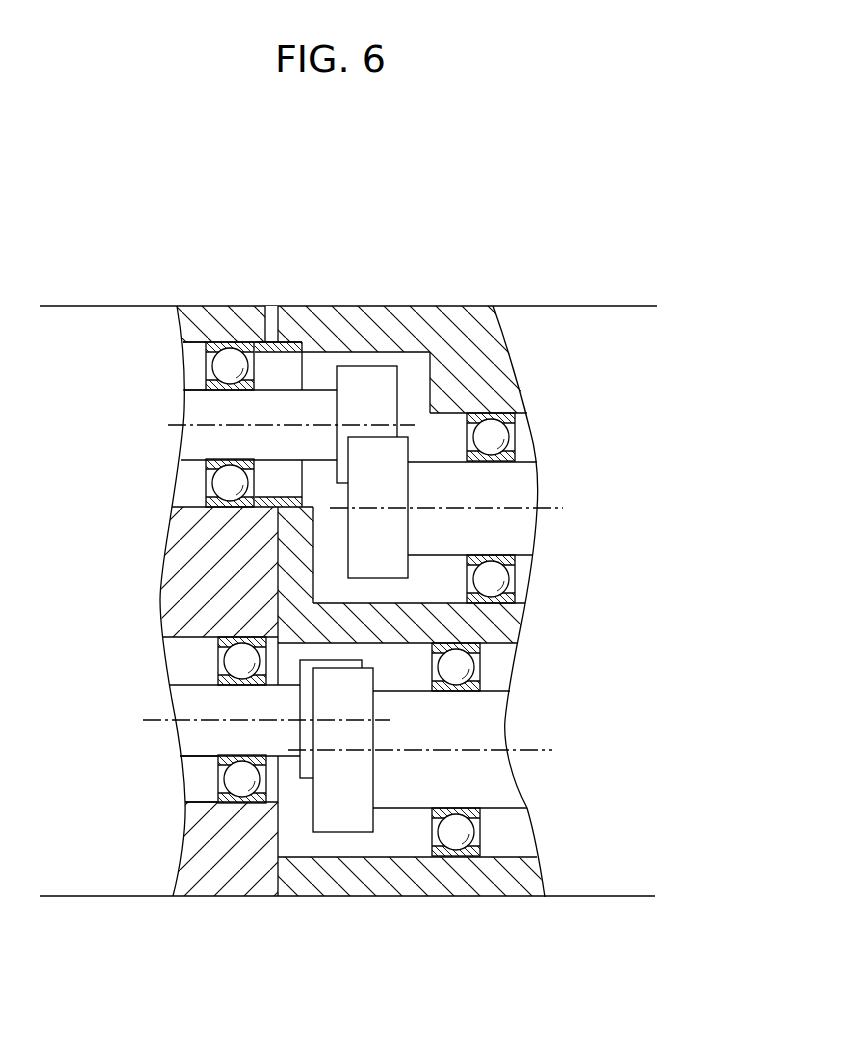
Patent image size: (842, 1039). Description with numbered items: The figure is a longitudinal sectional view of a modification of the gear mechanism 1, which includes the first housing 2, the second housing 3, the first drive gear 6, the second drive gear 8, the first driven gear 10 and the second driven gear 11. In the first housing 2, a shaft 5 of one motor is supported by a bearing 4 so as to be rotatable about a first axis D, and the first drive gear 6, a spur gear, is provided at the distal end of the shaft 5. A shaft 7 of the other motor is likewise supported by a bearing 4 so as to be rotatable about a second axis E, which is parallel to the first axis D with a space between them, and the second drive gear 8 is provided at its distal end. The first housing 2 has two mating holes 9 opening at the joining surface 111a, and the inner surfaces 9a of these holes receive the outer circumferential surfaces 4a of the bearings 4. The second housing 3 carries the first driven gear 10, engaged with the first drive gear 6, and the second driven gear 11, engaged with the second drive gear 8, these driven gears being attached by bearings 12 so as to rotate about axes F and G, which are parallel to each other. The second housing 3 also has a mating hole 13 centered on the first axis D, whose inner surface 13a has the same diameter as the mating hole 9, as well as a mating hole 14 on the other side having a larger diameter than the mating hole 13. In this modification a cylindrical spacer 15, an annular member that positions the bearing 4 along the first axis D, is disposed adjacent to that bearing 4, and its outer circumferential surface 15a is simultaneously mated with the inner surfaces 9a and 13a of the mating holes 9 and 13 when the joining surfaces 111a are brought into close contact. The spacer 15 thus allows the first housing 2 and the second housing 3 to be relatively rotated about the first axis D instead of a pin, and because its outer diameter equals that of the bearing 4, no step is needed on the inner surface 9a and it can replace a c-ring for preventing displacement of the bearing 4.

The gear mechanism 1 is at (512, 258).
The first housing 2 is at (65, 306).
The second housing 3 is at (467, 306).
The bearing 4 is at (223, 320).
The outer circumferential surface 4a is at (208, 340).
The shaft 5 is at (318, 385).
The first drive gear 6 is at (350, 366).
The shaft 7 is at (192, 684).
The second drive gear 8 is at (362, 706).
The mating hole 9 is at (192, 505).
The inner surface 9a is at (190, 352).
The first driven gear 10 is at (408, 532).
The second driven gear 11 is at (343, 832).
The bearing 12 is at (533, 435).
The mating hole 13 is at (396, 352).
The inner surface 13a is at (440, 378).
The mating hole 14 is at (392, 850).
The spacer 15 is at (295, 318).
The outer circumferential surface 15a is at (262, 306).
The joining surface 111a is at (272, 864).
The first axis D is at (194, 425).
The second axis E is at (160, 722).
The axis F is at (550, 508).
The axis G is at (540, 750).